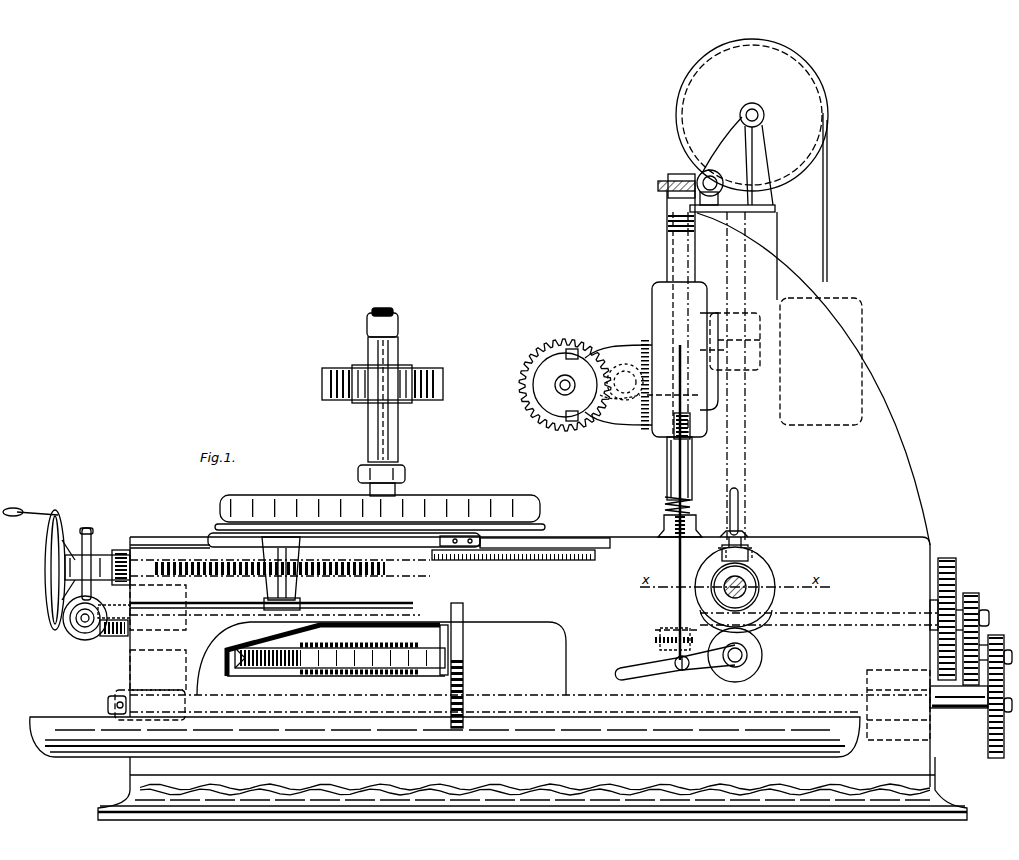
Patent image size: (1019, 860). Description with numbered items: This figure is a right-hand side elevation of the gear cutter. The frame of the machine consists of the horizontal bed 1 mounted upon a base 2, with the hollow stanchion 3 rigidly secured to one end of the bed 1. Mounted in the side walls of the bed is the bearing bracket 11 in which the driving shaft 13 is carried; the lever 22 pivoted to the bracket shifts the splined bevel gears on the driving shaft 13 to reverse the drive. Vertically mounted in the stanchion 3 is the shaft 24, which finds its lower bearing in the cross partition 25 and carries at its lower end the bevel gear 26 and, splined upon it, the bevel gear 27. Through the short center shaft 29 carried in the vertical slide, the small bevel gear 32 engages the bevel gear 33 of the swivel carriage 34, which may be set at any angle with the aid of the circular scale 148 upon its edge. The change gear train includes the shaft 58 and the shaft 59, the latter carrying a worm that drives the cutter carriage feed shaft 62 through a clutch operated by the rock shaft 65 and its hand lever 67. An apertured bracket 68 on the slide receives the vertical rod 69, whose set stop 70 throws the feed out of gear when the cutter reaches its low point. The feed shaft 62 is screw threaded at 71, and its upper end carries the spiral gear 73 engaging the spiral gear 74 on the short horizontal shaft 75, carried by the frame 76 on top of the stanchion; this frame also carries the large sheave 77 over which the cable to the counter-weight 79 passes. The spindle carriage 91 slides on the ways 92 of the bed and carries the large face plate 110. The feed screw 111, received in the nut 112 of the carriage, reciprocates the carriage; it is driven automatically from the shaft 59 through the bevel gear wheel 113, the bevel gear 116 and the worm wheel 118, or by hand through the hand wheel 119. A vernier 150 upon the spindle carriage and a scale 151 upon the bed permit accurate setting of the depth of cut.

The bed 1 is at (897, 741).
The base 2 is at (897, 781).
The stanchion 3 is at (813, 379).
The bearing bracket 11 is at (768, 598).
The driving shaft 13 is at (746, 586).
The lever 22 is at (739, 507).
The shaft 24 is at (745, 447).
The cross partition 25 is at (712, 406).
The bevel gear 26 is at (755, 560).
The bevel gear 27 is at (748, 362).
The center shaft 29 is at (660, 382).
The bevel gear 32 is at (622, 406).
The bevel gear 33 is at (625, 364).
The swivel carriage 34 is at (637, 340).
The shaft 58 is at (262, 672).
The shaft 59 is at (870, 616).
The feed shaft 62 is at (667, 467).
The rock shaft 65 is at (743, 655).
The hand lever 67 is at (660, 677).
The apertured bracket 68 is at (678, 410).
The rod 69 is at (690, 482).
The set stop 70 is at (690, 440).
The screw threaded portion 71 is at (666, 508).
The spiral gear 73 is at (658, 186).
The spiral gear 74 is at (722, 190).
The horizontal shaft 75 is at (828, 187).
The frame 76 is at (732, 164).
The sheave 77 is at (752, 115).
The counter-weight 79 is at (821, 361).
The spindle carriage 91 is at (218, 534).
The ways 92 is at (585, 538).
The face plate 110 is at (492, 490).
The feed screw 111 is at (385, 575).
The nut 112 is at (292, 570).
The bevel gear wheel 113 is at (108, 638).
The bevel gear 116 is at (78, 637).
The worm wheel 118 is at (87, 527).
The hand wheel 119 is at (47, 550).
The circular scale 148 is at (648, 432).
The vernier 150 is at (482, 541).
The scale 151 is at (482, 560).